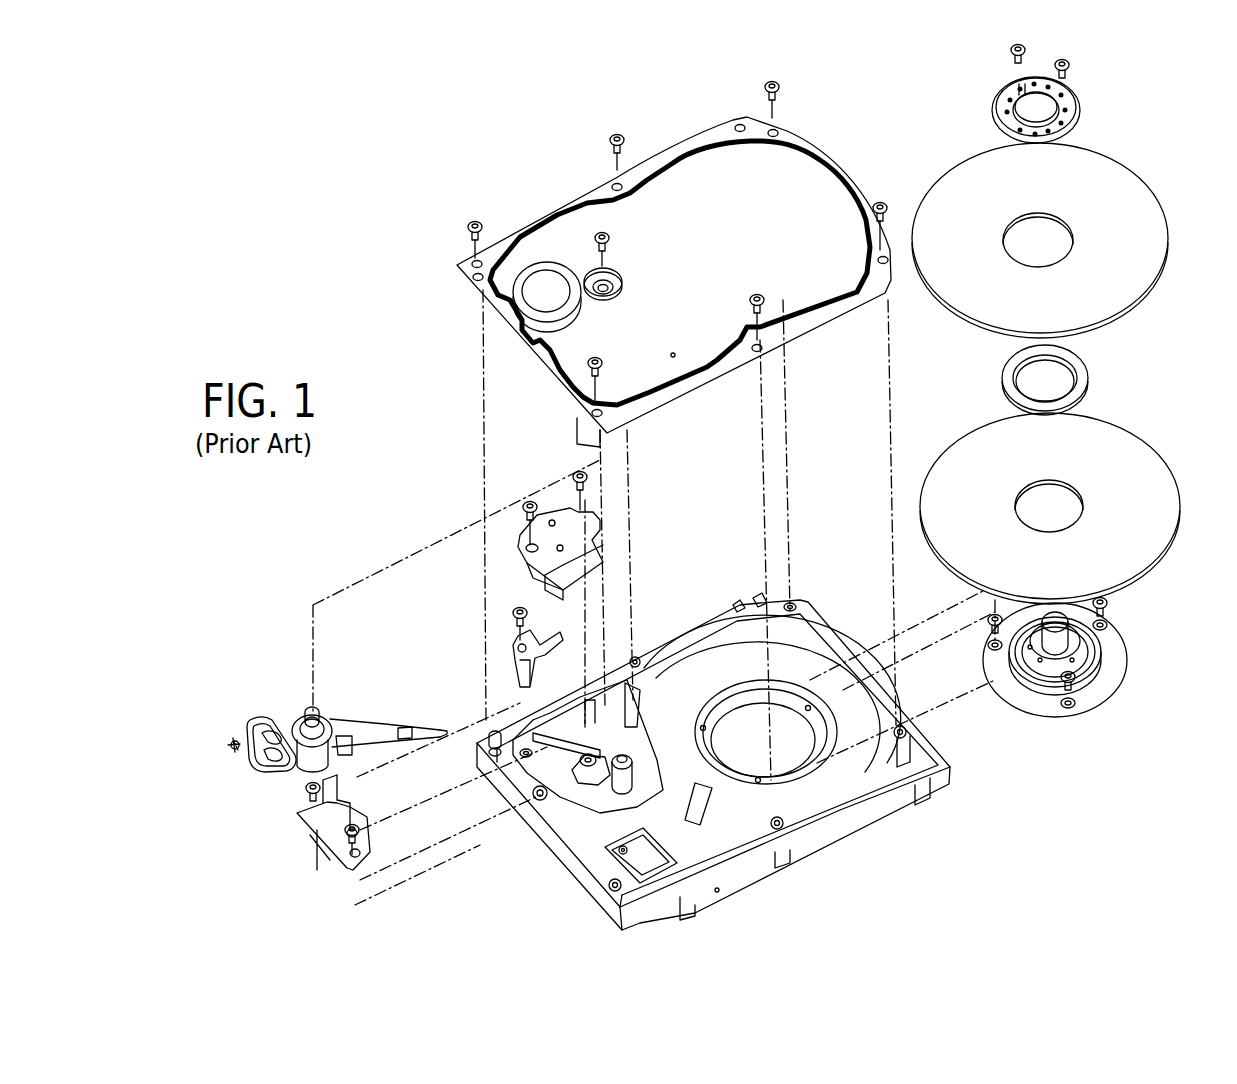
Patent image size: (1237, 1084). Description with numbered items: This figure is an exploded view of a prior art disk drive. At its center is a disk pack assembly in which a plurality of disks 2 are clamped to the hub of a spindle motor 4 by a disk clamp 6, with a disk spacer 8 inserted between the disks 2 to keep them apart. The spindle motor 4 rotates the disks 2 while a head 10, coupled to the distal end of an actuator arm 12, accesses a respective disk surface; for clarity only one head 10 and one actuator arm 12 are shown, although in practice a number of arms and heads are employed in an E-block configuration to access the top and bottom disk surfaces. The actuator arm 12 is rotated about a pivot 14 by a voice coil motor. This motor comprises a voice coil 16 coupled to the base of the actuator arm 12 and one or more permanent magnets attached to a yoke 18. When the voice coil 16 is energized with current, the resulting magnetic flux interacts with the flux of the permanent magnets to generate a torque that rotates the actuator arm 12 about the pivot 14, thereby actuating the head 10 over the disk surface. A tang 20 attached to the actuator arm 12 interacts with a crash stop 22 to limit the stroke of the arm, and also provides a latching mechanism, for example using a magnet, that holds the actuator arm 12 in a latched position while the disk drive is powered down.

The disks 2 is at (1170, 233).
The spindle motor 4 is at (1126, 655).
The disk clamp 6 is at (1081, 112).
The disk spacer 8 is at (1089, 378).
The head 10 is at (440, 730).
The actuator arm 12 is at (369, 728).
The pivot 14 is at (317, 718).
The voice coil 16 is at (253, 716).
The yoke 18 is at (605, 532).
The tang 20 is at (235, 748).
The crash stop 22 is at (511, 638).